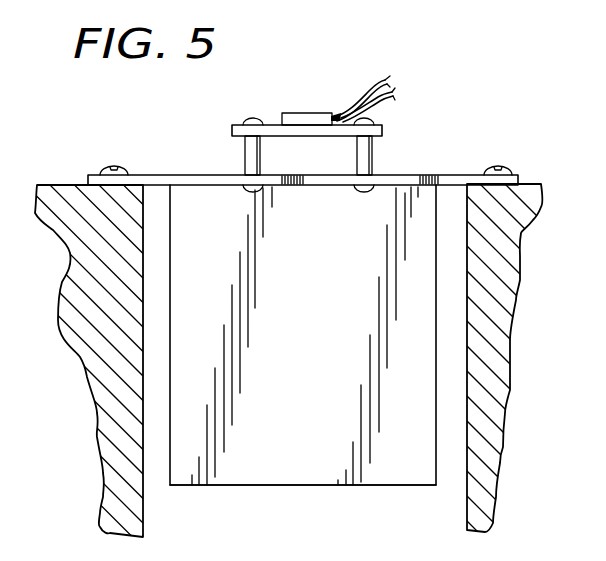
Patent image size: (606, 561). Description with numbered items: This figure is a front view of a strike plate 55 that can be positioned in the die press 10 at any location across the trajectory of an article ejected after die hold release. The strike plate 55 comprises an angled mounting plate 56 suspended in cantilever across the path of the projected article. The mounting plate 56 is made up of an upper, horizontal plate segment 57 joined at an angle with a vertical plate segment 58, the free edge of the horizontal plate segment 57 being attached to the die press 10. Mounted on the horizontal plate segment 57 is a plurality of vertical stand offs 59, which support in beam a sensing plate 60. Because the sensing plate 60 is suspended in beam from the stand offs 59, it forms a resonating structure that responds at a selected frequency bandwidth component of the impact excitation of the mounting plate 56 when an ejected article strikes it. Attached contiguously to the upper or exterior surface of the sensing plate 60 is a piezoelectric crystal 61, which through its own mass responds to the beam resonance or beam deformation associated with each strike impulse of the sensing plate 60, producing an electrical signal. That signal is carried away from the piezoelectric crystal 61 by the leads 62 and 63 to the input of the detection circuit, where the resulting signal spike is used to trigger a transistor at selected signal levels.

The die press 10 is at (540, 184).
The strike plate 55 is at (442, 175).
The angled mounting plate 56 is at (328, 380).
The horizontal plate segment 57 is at (340, 486).
The vertical plate segment 58 is at (187, 183).
The vertical stand offs 59 is at (358, 158).
The sensing plate 60 is at (384, 129).
The piezoelectric crystal 61 is at (312, 113).
The lead 62 is at (391, 99).
The lead 63 is at (383, 78).